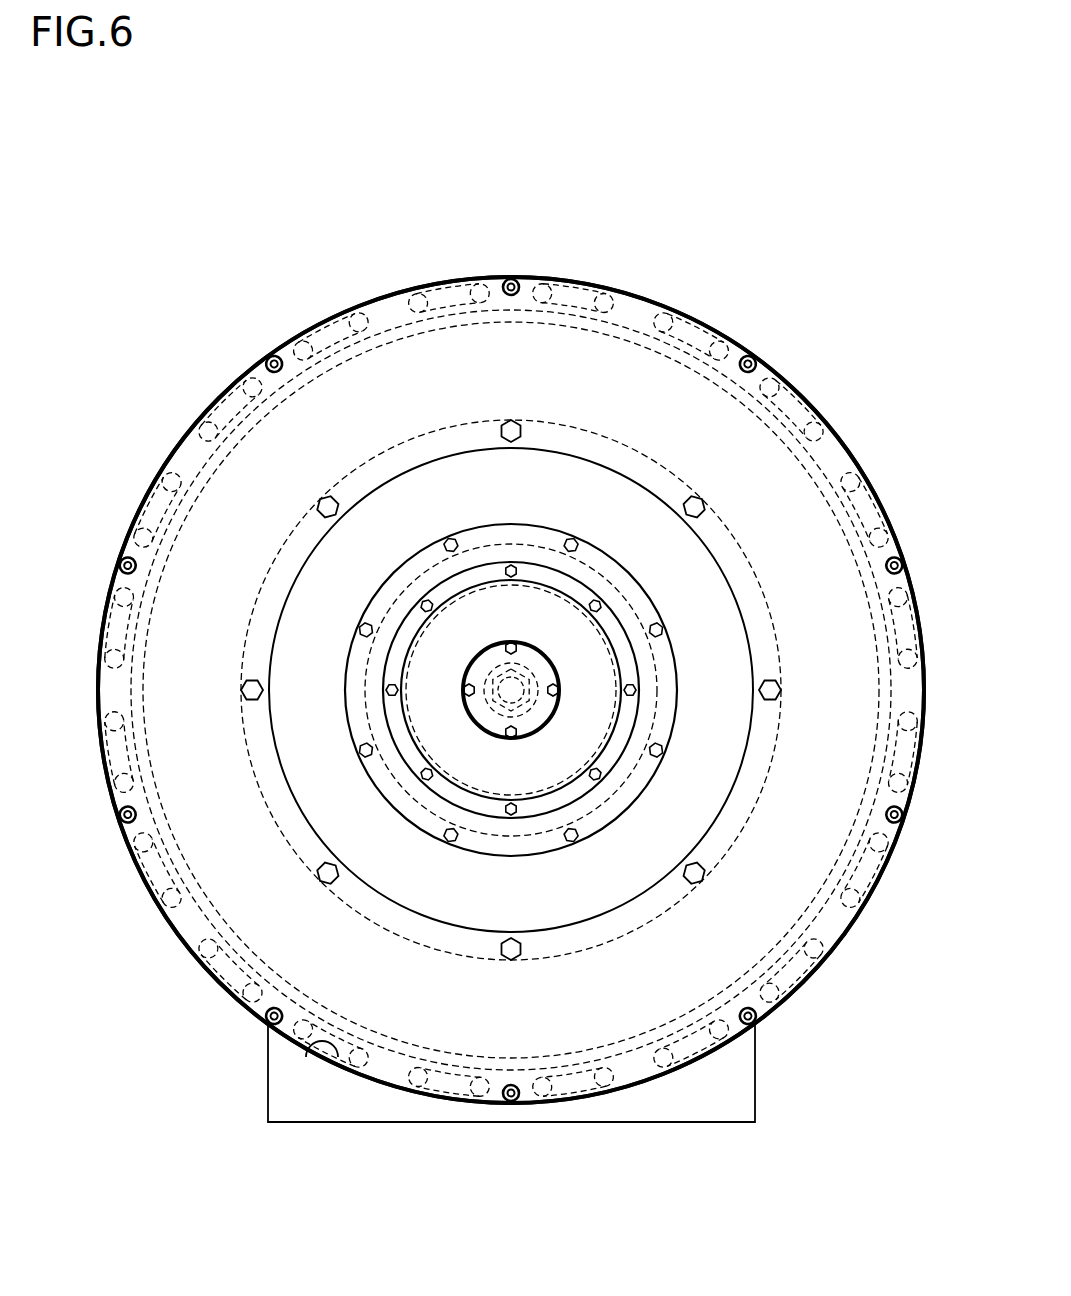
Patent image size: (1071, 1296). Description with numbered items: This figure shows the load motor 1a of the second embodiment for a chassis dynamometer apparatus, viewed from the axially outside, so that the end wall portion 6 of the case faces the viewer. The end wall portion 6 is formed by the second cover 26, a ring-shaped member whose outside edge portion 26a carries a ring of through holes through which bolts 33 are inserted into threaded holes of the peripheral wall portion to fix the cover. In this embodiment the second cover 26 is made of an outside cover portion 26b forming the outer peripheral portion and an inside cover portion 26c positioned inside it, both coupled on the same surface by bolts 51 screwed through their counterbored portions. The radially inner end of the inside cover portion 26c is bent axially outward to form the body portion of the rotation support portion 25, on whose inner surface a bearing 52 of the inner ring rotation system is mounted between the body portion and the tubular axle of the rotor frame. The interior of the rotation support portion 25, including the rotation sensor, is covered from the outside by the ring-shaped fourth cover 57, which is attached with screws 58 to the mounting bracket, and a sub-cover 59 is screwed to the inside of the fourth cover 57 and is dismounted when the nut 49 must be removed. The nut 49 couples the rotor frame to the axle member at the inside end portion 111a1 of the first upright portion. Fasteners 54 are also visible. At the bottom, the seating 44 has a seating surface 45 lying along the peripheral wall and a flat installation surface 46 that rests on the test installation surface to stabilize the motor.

The load motor 1a is at (668, 258).
The end wall portion 6 is at (212, 386).
The second cover 26 is at (198, 514).
The outside edge portion 26a is at (173, 448).
The outside cover portion 26b is at (195, 549).
The inside cover portion 26c is at (410, 488).
The bolt 33 is at (514, 280).
The bolt 51 is at (513, 425).
The rotation support portion 25 is at (608, 537).
The bolt 54 is at (450, 536).
The bearing 52 is at (700, 597).
The fourth cover 57 is at (645, 684).
The screw 58 is at (520, 570).
The sub-cover 59 is at (483, 668).
The nut 49 is at (500, 712).
The inside end portion 111a1 is at (522, 712).
The seating 44 is at (345, 1112).
The seating surface 45 is at (305, 1050).
The installation surface 46 is at (458, 1123).